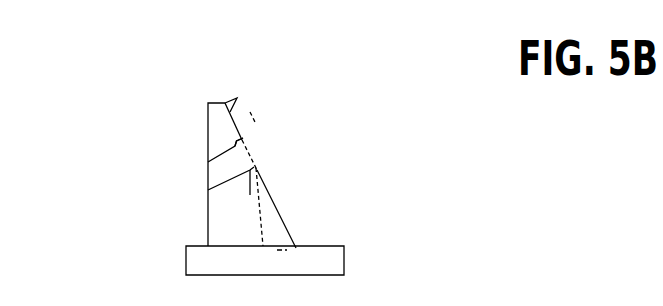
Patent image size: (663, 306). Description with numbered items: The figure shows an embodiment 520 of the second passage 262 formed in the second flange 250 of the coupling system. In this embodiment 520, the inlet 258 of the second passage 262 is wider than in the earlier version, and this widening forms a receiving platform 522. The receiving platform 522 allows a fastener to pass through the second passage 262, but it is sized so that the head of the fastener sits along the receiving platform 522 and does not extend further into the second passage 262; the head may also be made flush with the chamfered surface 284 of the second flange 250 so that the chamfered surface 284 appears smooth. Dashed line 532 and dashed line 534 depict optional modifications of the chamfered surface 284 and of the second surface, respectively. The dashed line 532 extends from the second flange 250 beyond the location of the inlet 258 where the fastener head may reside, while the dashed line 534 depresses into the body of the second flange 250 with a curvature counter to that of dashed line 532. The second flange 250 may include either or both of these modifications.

The second flange 250 is at (283, 215).
The inlet 258 is at (248, 149).
The second passage 262 is at (208, 175).
The chamfered surface 284 is at (239, 103).
The embodiment 520 is at (540, 139).
The receiving platform 522 is at (245, 207).
The dashed line 532 is at (258, 119).
The dashed line 534 is at (263, 248).